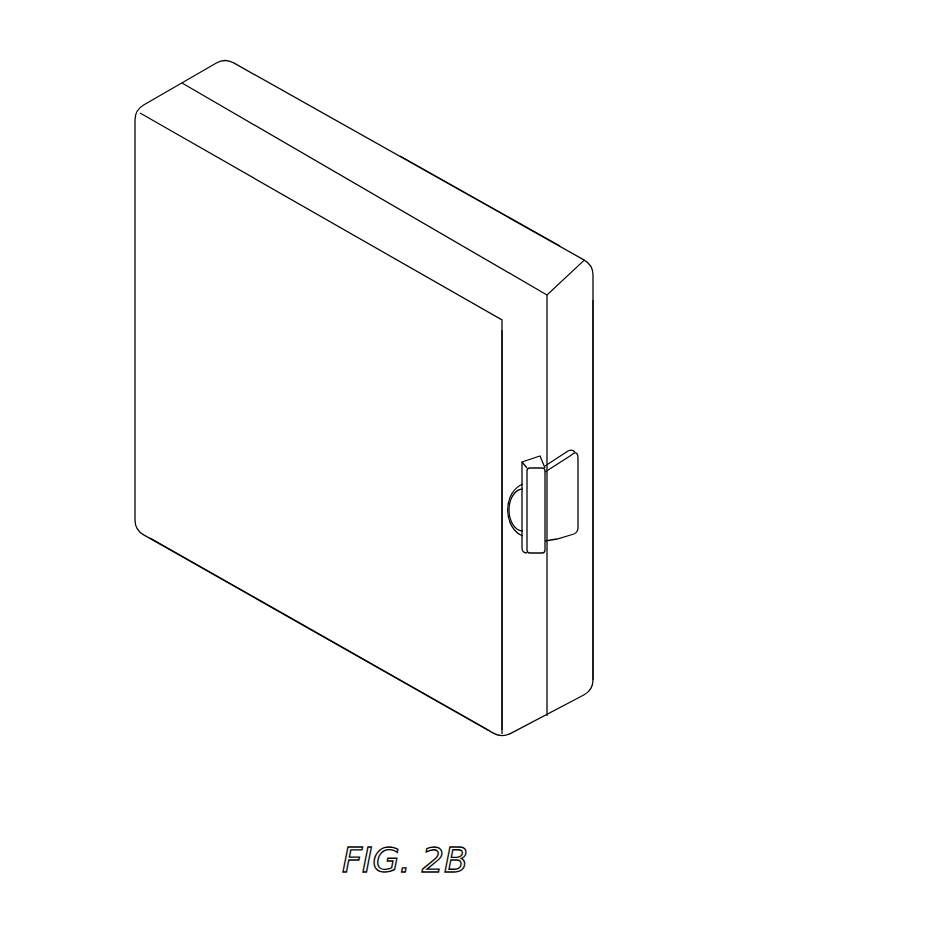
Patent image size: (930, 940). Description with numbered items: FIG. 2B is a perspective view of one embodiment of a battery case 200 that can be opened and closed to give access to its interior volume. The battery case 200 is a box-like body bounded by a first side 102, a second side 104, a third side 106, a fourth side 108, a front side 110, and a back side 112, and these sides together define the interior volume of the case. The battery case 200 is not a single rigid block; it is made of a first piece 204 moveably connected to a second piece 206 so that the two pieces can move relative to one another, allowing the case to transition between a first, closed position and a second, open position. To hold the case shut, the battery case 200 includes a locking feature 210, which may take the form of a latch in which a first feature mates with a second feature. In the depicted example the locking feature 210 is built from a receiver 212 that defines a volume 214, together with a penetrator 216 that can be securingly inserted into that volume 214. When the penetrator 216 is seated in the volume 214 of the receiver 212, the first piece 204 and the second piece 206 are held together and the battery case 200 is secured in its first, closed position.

The battery case 200 is at (548, 80).
The first side 102 is at (133, 213).
The second side 104 is at (397, 173).
The third side 106 is at (583, 345).
The fourth side 108 is at (300, 628).
The front side 110 is at (157, 320).
The back side 112 is at (525, 227).
The first piece 204 is at (522, 713).
The second piece 206 is at (577, 683).
The locking feature 210 is at (533, 587).
The receiver 212 is at (537, 543).
The volume 214 is at (510, 484).
The penetrator 216 is at (568, 490).